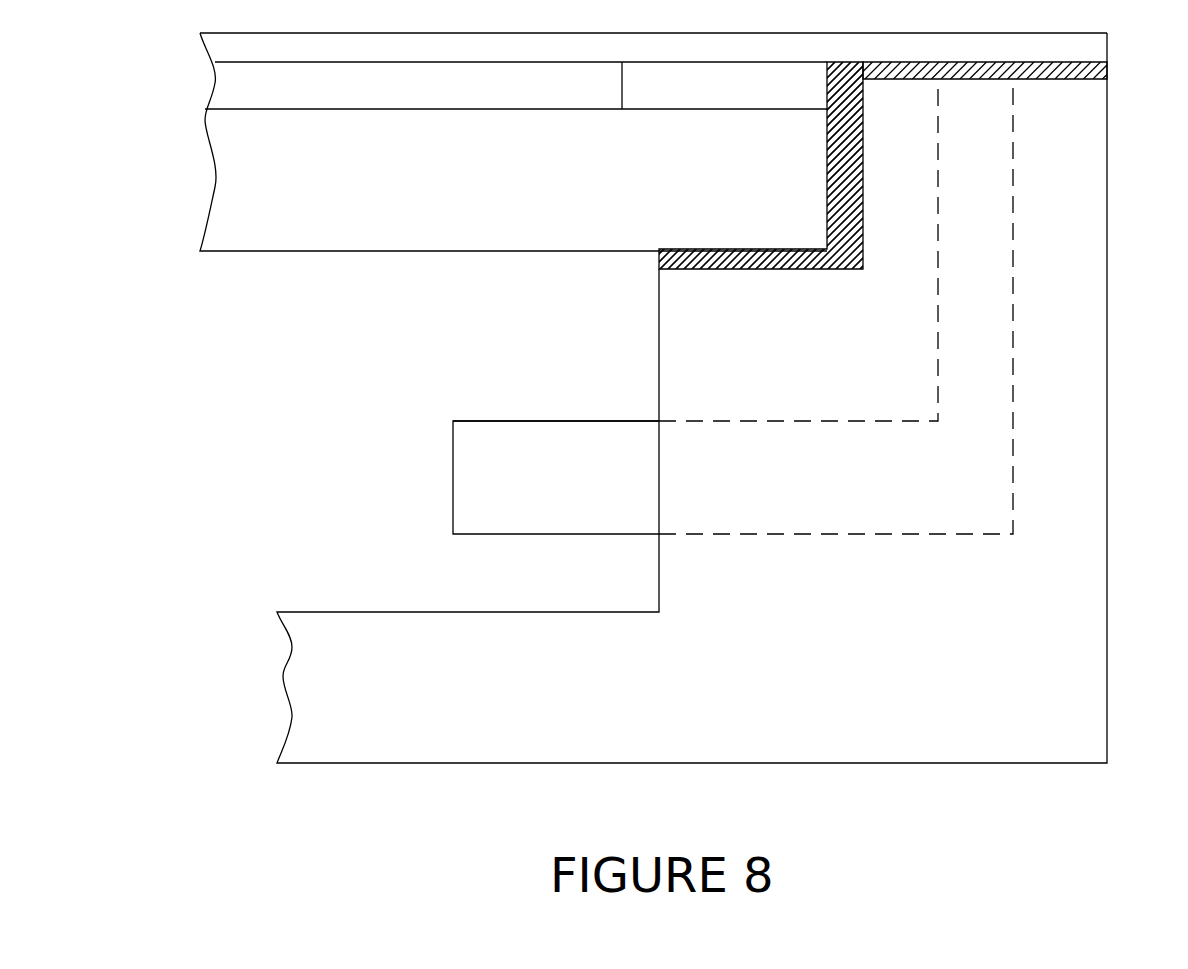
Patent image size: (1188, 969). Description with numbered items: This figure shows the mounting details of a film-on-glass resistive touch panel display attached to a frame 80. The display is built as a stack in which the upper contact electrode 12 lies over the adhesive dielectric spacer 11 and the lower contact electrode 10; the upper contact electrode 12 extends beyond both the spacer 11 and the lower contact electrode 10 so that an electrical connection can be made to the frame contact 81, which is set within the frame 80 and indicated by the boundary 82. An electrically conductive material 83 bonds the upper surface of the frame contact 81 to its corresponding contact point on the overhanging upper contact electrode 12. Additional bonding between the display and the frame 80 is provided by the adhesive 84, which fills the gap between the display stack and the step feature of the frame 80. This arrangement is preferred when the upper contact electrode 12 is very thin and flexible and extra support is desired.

The lower contact electrode 10 is at (539, 187).
The adhesive dielectric spacer 11 is at (734, 95).
The upper contact electrode 12 is at (599, 57).
The frame 80 is at (779, 679).
The frame contact 81 is at (568, 492).
The region boundary 82 is at (509, 421).
The electrically conductive material 83 is at (1107, 79).
The adhesive 84 is at (763, 165).